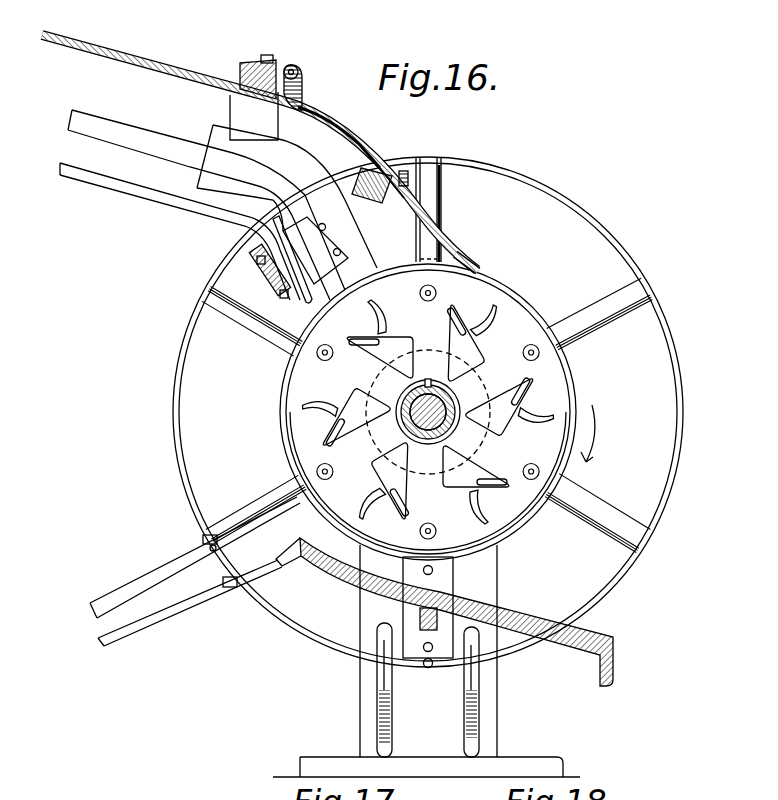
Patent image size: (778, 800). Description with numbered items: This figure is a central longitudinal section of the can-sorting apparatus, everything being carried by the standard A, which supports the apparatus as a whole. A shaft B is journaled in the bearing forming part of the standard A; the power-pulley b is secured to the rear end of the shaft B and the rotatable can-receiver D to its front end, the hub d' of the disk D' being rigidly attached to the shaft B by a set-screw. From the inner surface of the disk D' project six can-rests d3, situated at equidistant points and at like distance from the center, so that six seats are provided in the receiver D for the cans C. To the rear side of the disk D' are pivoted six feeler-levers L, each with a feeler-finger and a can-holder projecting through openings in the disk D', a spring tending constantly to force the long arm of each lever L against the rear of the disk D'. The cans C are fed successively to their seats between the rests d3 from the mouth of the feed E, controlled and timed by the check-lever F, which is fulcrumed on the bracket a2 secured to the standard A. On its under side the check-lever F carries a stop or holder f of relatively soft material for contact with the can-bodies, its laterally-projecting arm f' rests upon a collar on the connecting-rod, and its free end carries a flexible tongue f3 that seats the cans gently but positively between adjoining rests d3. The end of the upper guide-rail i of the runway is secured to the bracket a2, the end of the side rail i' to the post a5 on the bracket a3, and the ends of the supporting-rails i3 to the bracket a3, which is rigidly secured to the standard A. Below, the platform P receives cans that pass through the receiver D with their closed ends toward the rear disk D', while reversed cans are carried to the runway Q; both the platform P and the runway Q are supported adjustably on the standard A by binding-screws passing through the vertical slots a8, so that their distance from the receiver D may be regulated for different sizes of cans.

The power-pulley b is at (436, 412).
The feed E is at (420, 210).
The can-receiver D is at (414, 412).
The disk D' is at (376, 375).
The upper guide-rail i is at (290, 287).
The side rail i' is at (289, 308).
The supporting-rail i3 is at (180, 231).
The stop or holder f is at (375, 189).
The laterally-projecting arm f' is at (393, 157).
The flexible tongue f3 is at (467, 252).
The check-lever F is at (339, 131).
The bracket a2 is at (266, 97).
The bracket a3 is at (265, 271).
The post a5 is at (310, 259).
The vertical slot a8 is at (428, 620).
The can C is at (287, 196).
The shaft B is at (438, 410).
The hub d' is at (426, 412).
The can-rest d3 is at (428, 408).
The feeler-lever L is at (428, 412).
The standard A is at (426, 661).
The platform P is at (444, 612).
The runway Q is at (195, 571).